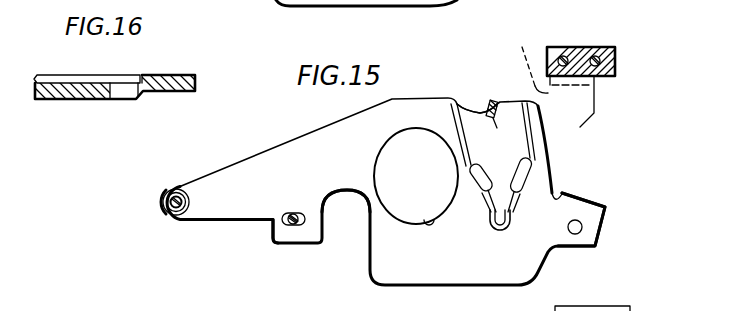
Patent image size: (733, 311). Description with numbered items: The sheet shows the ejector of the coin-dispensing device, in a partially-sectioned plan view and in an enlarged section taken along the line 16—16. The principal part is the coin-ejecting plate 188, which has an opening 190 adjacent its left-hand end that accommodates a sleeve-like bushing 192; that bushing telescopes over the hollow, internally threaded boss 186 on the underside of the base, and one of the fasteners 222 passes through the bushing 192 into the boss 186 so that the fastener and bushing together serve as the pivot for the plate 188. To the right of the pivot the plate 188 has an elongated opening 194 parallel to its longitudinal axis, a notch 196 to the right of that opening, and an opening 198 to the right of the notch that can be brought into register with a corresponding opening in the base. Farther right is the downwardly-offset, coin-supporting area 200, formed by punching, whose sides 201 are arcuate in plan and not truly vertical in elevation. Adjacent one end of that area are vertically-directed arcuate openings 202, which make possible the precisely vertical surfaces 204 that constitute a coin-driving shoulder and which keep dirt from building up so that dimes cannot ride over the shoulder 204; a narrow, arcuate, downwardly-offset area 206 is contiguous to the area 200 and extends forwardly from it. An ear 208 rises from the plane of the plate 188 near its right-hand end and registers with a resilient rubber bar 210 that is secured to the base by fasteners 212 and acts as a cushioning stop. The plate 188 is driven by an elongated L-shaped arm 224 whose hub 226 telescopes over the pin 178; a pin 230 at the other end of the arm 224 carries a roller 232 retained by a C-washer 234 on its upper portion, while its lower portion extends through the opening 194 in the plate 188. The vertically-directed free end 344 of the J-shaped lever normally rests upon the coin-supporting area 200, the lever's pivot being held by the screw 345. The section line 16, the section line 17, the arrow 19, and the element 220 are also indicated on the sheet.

In FIG. 15, the section line 16— 16 is at (572, 187).
In FIG. 15, the section line 17- 17 is at (498, 243).
In FIG. 15, the latch assembly 19 is at (489, 93).
In FIG. 15, the pin 178 is at (500, 18).
In FIG. 15, the boss 186 is at (163, 214).
In FIG. 15, the coin-ejecting plate 188 is at (315, 166).
In FIG. 15, the opening 190 is at (179, 187).
In FIG. 15, the sleeve-like bushing 192 is at (181, 211).
In FIG. 15, the opening 194 is at (302, 226).
In FIG. 15, the notch 196 is at (350, 195).
In FIG. 15, the opening 198 is at (428, 224).
In FIG. 16, the coin-supporting area 200 is at (91, 80).
In FIG. 15, the coin-supporting area 200 is at (470, 118).
In FIG. 15, the sides 201 is at (456, 119).
In FIG. 16, the arcuate openings 202 is at (127, 93).
In FIG. 15, the arcuate openings 202 is at (490, 190).
In FIG. 16, the coin-driving shoulder 204 is at (138, 78).
In FIG. 15, the coin-driving shoulder 204 is at (490, 213).
In FIG. 15, the narrow downwardly-offset area 206 is at (500, 228).
In FIG. 15, the ear 208 is at (597, 89).
In FIG. 15, the bar 210 is at (616, 62).
In FIG. 15, the fasteners 212 is at (597, 47).
In FIG. 15, the housing 220 is at (488, 3).
In FIG. 15, the fasteners 222 is at (164, 198).
In FIG. 15, the arm 224 is at (412, 0).
In FIG. 15, the hub 226 is at (505, 8).
In FIG. 15, the pin 230 is at (273, 228).
In FIG. 15, the roller 232 is at (274, 0).
In FIG. 15, the C-washer 234 is at (300, 0).
In FIG. 15, the free end 344 is at (494, 100).
In FIG. 15, the screw 345 is at (585, 5).